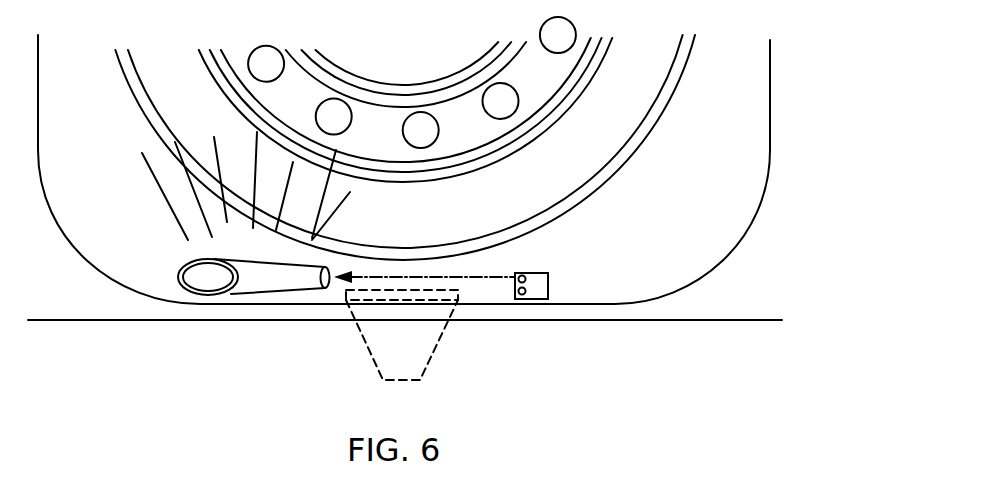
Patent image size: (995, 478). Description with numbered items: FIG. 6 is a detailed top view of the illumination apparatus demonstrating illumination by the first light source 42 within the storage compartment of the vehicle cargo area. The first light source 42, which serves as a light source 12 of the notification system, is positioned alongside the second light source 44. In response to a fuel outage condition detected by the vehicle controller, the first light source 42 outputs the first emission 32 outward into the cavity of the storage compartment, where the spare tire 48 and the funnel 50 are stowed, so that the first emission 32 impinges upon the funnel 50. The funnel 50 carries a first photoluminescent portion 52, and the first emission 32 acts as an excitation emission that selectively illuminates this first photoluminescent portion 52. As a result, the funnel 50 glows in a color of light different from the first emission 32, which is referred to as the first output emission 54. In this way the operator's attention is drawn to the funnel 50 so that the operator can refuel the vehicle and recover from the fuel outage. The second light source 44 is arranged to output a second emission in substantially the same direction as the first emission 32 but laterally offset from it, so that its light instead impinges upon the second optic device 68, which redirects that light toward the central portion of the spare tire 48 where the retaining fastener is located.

The light source 12 is at (554, 288).
The first emission 32 is at (442, 277).
The first light source 42 is at (522, 273).
The second light source 44 is at (523, 294).
The spare tire 48 is at (652, 80).
The funnel 50 is at (271, 283).
The first photoluminescent portion 52 is at (211, 281).
The first output emission 54 is at (326, 178).
The second optic device 68 is at (402, 335).